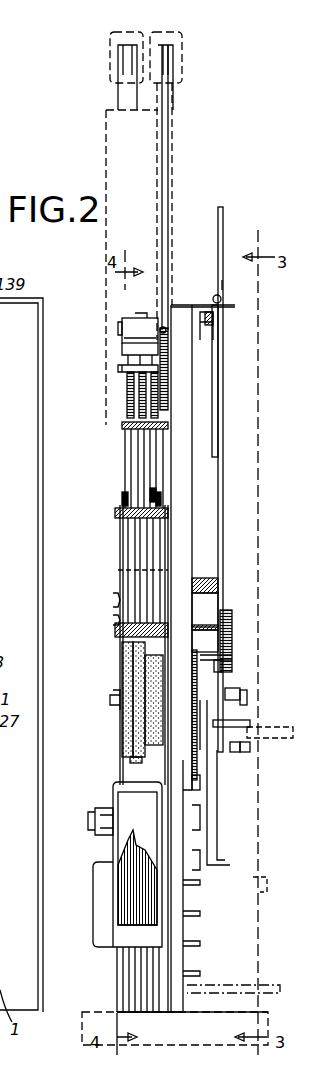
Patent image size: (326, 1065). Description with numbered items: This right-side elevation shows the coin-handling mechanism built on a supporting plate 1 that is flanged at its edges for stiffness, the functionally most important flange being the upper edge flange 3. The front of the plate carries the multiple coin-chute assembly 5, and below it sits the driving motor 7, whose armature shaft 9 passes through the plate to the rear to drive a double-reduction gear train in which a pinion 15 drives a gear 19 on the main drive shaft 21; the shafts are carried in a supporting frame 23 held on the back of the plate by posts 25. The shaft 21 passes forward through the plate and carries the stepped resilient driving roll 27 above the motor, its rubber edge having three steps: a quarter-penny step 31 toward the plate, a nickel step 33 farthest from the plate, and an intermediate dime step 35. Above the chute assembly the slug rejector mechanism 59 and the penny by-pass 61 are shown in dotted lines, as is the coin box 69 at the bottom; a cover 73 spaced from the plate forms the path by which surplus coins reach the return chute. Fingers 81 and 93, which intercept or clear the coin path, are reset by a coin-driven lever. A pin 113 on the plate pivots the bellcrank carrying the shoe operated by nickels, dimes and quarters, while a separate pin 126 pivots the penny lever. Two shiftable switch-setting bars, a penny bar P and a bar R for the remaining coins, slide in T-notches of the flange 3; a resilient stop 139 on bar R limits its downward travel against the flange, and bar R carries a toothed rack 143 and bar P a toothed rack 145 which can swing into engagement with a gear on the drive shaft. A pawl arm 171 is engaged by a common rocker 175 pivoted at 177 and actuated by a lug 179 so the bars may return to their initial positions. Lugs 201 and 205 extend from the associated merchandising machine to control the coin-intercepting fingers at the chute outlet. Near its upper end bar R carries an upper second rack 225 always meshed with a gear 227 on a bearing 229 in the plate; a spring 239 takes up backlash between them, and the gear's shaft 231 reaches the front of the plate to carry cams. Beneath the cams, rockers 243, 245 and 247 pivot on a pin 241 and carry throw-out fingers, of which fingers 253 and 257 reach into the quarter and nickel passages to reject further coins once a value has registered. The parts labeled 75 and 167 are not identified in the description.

The supporting plate 1 is at (153, 983).
The flange 3 is at (183, 653).
The multiple coin-chute assembly 5 is at (129, 556).
The driving motor 7 is at (118, 885).
The armature shaft 9 is at (91, 807).
The pinion 15 is at (197, 780).
The gear 19 is at (193, 648).
The main drive shaft 21 is at (110, 700).
The supporting frame 23 is at (220, 667).
The posts 25 is at (230, 652).
The stepped resilient driving roll 27 is at (116, 675).
The step 31 is at (152, 722).
The step 33 is at (125, 740).
The step 35 is at (133, 772).
The slug rejector mechanism 59 is at (103, 170).
The by-pass 61 is at (177, 158).
The coin box 69 is at (98, 1008).
The cover 73 is at (122, 538).
The stop 75 is at (157, 498).
The finger 81 is at (118, 512).
The finger 93 is at (118, 570).
The pin 113 is at (205, 583).
The pin 126 is at (205, 622).
The resilient stop 139 is at (213, 295).
The toothed rack 143 is at (200, 825).
The toothed rack 145 is at (227, 612).
The member 167 is at (247, 697).
The arm 171 is at (247, 730).
The common rocker 175 is at (248, 717).
The pivot 177 is at (245, 750).
The lug 179 is at (248, 748).
The lug 201 is at (267, 980).
The lug 205 is at (260, 888).
The upper second rack 225 is at (212, 405).
The gear 227 is at (218, 318).
The bearing 229 is at (210, 318).
The shaft 231 is at (120, 332).
The spring 239 is at (163, 363).
The pin 241 is at (120, 368).
The rocker 243 is at (150, 473).
The rocker 245 is at (138, 457).
The rocker 247 is at (122, 428).
The throw-out finger 253 is at (153, 493).
The throw-out finger 257 is at (125, 498).
The shiftable switch-setting bar P is at (218, 210).
The shiftable switch-setting bar R is at (223, 284).